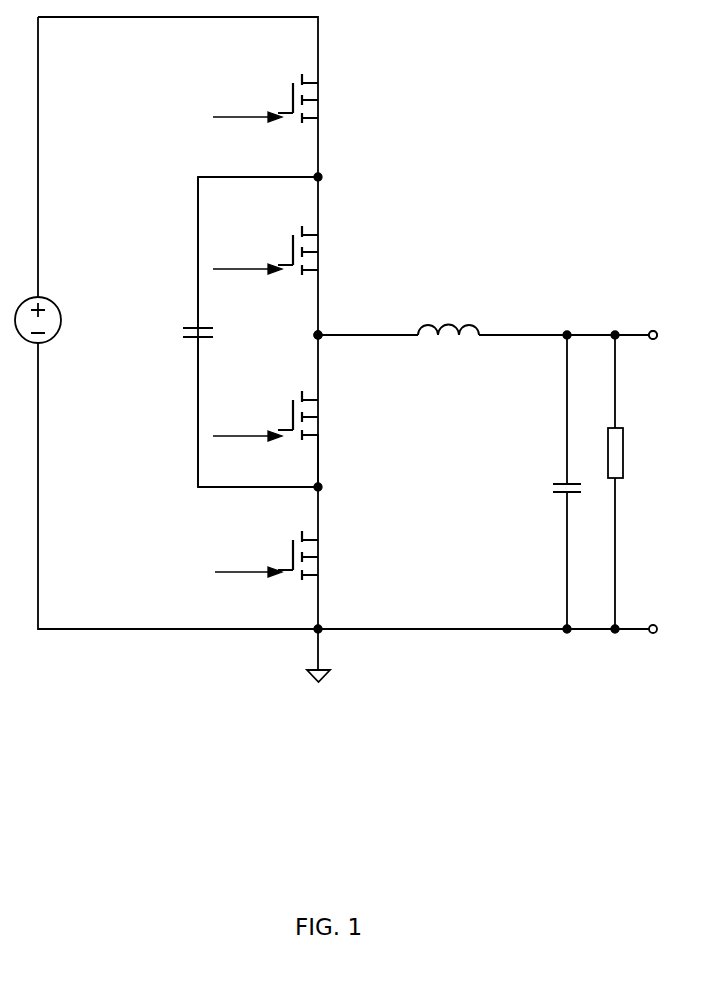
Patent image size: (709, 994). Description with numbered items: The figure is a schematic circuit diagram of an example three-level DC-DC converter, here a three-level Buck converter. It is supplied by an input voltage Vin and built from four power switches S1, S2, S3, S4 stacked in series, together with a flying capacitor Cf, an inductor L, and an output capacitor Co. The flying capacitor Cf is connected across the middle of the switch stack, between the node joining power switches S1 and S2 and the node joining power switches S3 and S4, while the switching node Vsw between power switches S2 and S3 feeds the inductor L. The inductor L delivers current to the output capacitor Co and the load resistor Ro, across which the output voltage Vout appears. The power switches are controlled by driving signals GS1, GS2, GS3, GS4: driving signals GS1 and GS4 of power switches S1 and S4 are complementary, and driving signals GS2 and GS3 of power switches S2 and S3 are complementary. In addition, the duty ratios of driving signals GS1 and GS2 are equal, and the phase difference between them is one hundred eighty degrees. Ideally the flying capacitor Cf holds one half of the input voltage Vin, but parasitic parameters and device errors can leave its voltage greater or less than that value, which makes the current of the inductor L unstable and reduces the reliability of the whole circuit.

The input voltage Vin is at (56, 320).
The power switch S1 is at (316, 98).
The power switch S2 is at (316, 250).
The power switch S3 is at (316, 415).
The power switch S4 is at (316, 555).
The driving signal GS1 is at (244, 104).
The driving signal GS2 is at (244, 256).
The driving signal GS3 is at (245, 423).
The driving signal GS4 is at (245, 560).
The flying capacitor Cf is at (181, 332).
The switching node Vsw is at (297, 335).
The inductor L is at (448, 313).
The output capacitor Co is at (548, 482).
The load resistor Ro is at (631, 482).
The output voltage Vout is at (641, 321).